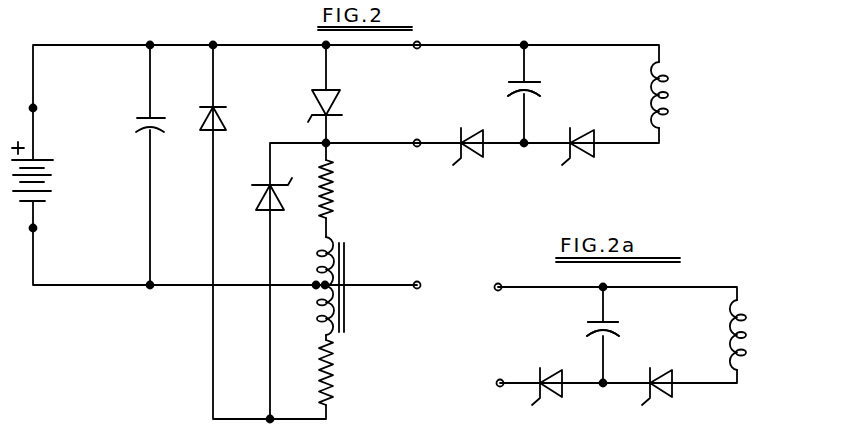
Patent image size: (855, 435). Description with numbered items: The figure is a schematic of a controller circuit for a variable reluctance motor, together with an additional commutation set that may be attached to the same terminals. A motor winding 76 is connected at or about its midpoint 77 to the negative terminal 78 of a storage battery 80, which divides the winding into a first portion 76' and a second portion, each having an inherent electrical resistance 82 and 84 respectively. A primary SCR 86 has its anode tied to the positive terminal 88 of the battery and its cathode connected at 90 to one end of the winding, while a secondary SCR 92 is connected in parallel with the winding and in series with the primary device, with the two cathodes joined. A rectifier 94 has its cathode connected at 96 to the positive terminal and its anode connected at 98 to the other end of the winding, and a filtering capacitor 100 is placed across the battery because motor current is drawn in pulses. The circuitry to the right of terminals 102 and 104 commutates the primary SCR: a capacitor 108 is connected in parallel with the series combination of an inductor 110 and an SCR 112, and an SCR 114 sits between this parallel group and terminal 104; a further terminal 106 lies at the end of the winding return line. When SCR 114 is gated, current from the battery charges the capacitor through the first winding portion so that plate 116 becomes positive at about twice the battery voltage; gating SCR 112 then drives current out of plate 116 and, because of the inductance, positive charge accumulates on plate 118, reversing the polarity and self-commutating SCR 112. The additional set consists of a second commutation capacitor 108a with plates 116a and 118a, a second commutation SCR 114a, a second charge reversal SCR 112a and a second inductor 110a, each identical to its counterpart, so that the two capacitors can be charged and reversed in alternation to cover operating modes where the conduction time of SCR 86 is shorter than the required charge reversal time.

In FIG. 2, the winding 76 is at (312, 290).
In FIG. 2, the first portion of the winding 76' is at (371, 261).
In FIG. 2, the midpoint 77 is at (316, 285).
In FIG. 2, the negative terminal 78 is at (36, 228).
In FIG. 2, the storage battery 80 is at (54, 182).
In FIG. 2, the inherent electrical resistance 82 is at (333, 182).
In FIG. 2, the inherent electrical resistance 84 is at (333, 366).
In FIG. 2, the primary solid state switching device (SCR) 86 is at (334, 102).
In FIG. 2, the positive terminal 88 is at (36, 108).
In FIG. 2, the cathode connection point 90 is at (329, 142).
In FIG. 2, the secondary solid state switching device (SCR) 92 is at (262, 202).
In FIG. 2, the rectifier 94 is at (223, 120).
In FIG. 2, the cathode connection point 96 is at (215, 42).
In FIG. 2, the anode connection point 98 is at (268, 422).
In FIG. 2, the filtering capacitor 100 is at (148, 126).
In FIG. 2, the terminal 102 is at (419, 48).
In FIG. 2a, the terminal 102 is at (496, 290).
In FIG. 2, the terminal 104 is at (415, 146).
In FIG. 2a, the terminal 104 is at (498, 380).
In FIG. 2, the terminal 106 is at (419, 282).
In FIG. 2, the capacitor 108 is at (536, 82).
In FIG. 2, the inductor 110 is at (668, 102).
In FIG. 2, the SCR 112 is at (580, 152).
In FIG. 2, the SCR 114 is at (470, 152).
In FIG. 2, the plate 116 is at (512, 80).
In FIG. 2, the plate 118 is at (528, 98).
In FIG. 2a, the second commutation capacitor 108a is at (612, 319).
In FIG. 2a, the second inductor 110a is at (746, 352).
In FIG. 2a, the second charge reversal SCR 112a is at (662, 392).
In FIG. 2a, the second commutation SCR 114a is at (550, 392).
In FIG. 2a, the plate 116a is at (592, 320).
In FIG. 2a, the plate 118a is at (610, 337).